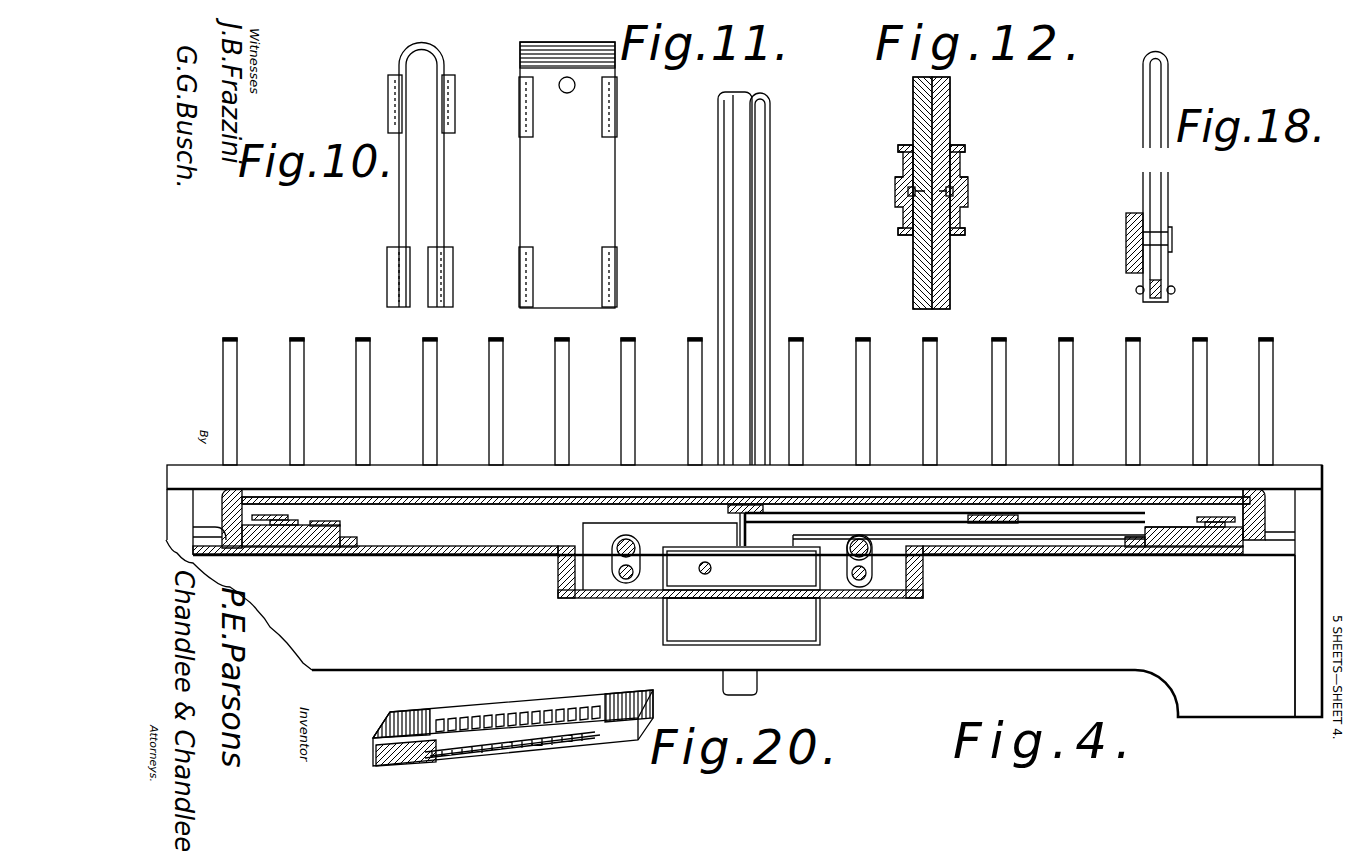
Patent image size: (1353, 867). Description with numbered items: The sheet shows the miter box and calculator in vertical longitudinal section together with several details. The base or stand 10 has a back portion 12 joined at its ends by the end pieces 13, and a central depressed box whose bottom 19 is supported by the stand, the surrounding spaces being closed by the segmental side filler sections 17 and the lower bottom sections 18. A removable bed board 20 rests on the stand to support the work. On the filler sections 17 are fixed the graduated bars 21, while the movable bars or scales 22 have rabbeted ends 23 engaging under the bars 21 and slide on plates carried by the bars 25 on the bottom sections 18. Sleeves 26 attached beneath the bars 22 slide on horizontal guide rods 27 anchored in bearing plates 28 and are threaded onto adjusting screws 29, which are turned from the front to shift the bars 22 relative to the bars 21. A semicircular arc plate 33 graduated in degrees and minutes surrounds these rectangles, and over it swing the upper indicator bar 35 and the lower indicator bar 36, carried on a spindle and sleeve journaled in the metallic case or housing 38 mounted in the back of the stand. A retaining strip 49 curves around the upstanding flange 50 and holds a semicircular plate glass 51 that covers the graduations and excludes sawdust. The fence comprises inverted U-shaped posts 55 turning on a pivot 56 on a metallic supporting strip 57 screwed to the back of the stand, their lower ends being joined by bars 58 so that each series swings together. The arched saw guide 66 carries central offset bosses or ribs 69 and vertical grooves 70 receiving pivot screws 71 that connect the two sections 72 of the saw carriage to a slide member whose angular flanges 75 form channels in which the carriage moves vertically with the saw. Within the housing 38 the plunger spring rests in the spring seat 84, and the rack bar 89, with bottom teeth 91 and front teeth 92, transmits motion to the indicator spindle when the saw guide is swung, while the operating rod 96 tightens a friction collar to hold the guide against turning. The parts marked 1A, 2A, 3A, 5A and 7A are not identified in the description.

In FIG. 4, the side wall of hanging bracket 1A is at (557, 567).
In FIG. 4, the step of nut block 2A is at (1135, 550).
In FIG. 4, the plate of nut block 3A is at (275, 528).
In FIG. 4, the pin row 5A is at (516, 455).
In FIG. 10, the clip plate 7A is at (622, 192).
In FIG. 12, the clip plate 7A is at (905, 220).
In FIG. 4, the base or stand 10 is at (956, 680).
In FIG. 4, the back portion 12 is at (1088, 662).
In FIG. 4, the end pieces 13 is at (1300, 620).
In FIG. 4, the segmental side filler sections 17 is at (312, 547).
In FIG. 4, the bottom sections 18 is at (470, 555).
In FIG. 4, the bottom 19 is at (648, 600).
In FIG. 4, the bed board 20 is at (575, 468).
In FIG. 4, the graduated bars 21 is at (345, 518).
In FIG. 4, the movable bars or scales 22 is at (1058, 535).
In FIG. 4, the rabbeted ends 23 is at (1127, 540).
In FIG. 4, the bars 25 is at (1142, 535).
In FIG. 4, the sleeves 26 is at (880, 540).
In FIG. 4, the guide rods 27 is at (616, 548).
In FIG. 4, the bearing plates 28 is at (656, 530).
In FIG. 4, the adjusting screws 29 is at (620, 578).
In FIG. 4, the arc plate 33 is at (256, 514).
In FIG. 4, the upper indicator bar 35 is at (748, 508).
In FIG. 4, the lower indicator bar 36 is at (992, 515).
In FIG. 4, the metallic case or housing 38 is at (730, 628).
In FIG. 4, the retaining strip 49 is at (1282, 480).
In FIG. 4, the upstanding flange 50 is at (1248, 532).
In FIG. 4, the plate glass 51 is at (870, 500).
In FIG. 18, the posts 55 is at (1143, 180).
In FIG. 4, the posts 55 is at (476, 395).
In FIG. 18, the pivot 56 is at (1172, 238).
In FIG. 18, the supporting strip 57 is at (1126, 225).
In FIG. 18, the bars 58 is at (1168, 292).
In FIG. 11, the saw guide 66 is at (719, 222).
In FIG. 12, the saw guide 66 is at (965, 225).
In FIG. 11, the bosses or ribs 69 is at (740, 282).
In FIG. 12, the bosses or ribs 69 is at (970, 192).
In FIG. 12, the vertical grooves 70 is at (958, 186).
In FIG. 12, the pivot screws 71 is at (905, 190).
In FIG. 12, the sections 72 is at (922, 300).
In FIG. 10, the angular flanges 75 is at (440, 101).
In FIG. 12, the angular flanges 75 is at (900, 147).
In FIG. 4, the spring seat 84 is at (758, 690).
In FIG. 20, the rack bar 89 is at (625, 735).
In FIG. 20, the teeth 91 is at (510, 750).
In FIG. 20, the teeth 92 is at (495, 718).
In FIG. 4, the operating rod 96 is at (712, 568).